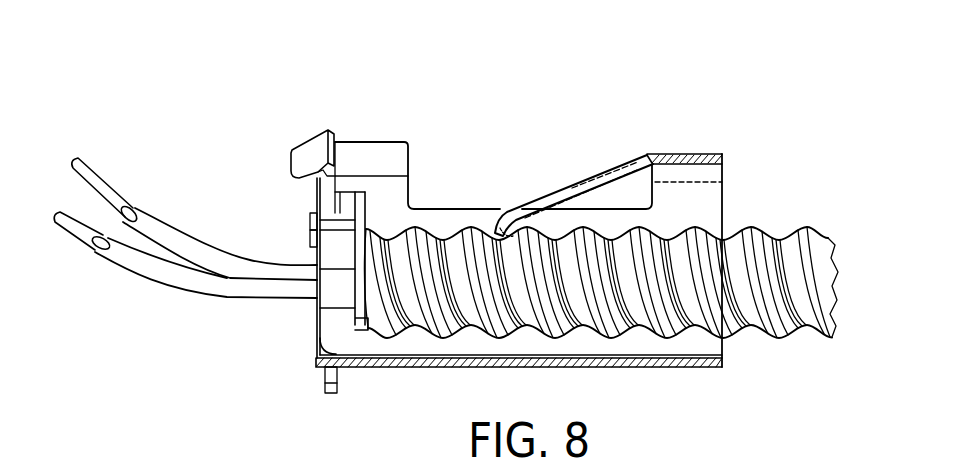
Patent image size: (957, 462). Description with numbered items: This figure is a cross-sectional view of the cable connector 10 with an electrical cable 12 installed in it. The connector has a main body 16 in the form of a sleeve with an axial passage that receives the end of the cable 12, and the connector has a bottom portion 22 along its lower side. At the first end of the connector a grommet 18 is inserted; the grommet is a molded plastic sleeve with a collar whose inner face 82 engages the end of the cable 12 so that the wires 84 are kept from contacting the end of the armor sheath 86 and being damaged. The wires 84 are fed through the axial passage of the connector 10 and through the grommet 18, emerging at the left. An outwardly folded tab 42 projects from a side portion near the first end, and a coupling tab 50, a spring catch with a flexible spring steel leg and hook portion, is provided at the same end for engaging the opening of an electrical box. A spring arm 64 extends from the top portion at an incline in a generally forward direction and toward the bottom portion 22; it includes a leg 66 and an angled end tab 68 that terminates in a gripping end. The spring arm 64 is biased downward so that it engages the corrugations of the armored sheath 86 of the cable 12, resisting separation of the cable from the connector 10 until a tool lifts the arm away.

The cable connector 10 is at (515, 123).
The electrical cable 12 is at (821, 222).
The main body 16 is at (726, 152).
The grommet 18 is at (313, 328).
The bottom portion 22 is at (548, 368).
The tab 42 is at (337, 388).
The coupling tab 50 is at (290, 144).
The spring arm 64 is at (629, 150).
The leg 66 is at (571, 183).
The angled end tab 68 is at (494, 216).
The inner face 82 is at (343, 193).
The wires 84 is at (158, 222).
The armor sheath 86 is at (772, 230).